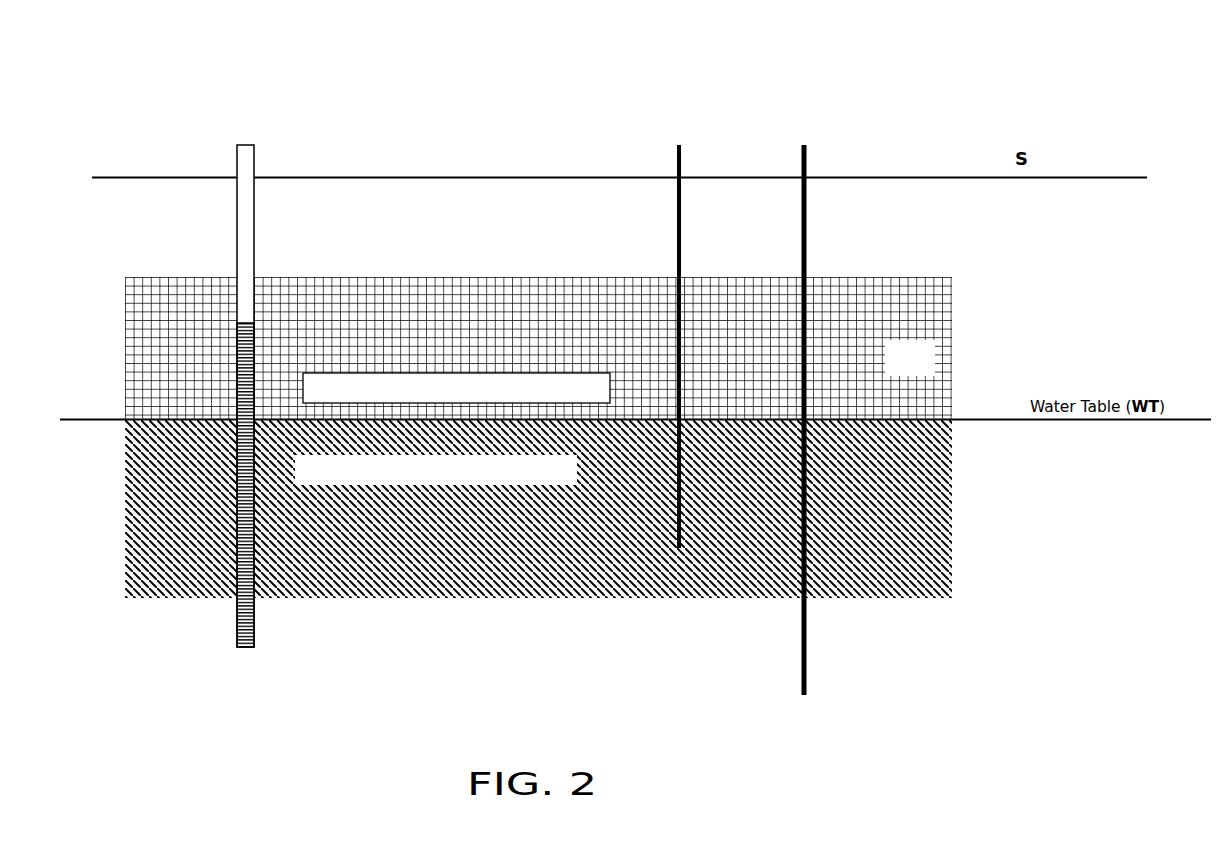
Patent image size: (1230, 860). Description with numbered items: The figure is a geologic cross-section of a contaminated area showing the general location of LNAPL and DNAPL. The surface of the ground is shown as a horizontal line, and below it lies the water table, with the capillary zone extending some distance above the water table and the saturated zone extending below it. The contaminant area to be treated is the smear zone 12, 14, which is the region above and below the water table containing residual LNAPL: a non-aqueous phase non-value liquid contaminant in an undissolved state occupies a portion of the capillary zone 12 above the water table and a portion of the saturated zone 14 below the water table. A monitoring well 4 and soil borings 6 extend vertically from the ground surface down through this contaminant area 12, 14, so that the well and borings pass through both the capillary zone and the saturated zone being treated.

The monitoring well 4 is at (237, 145).
The soil boring 6 is at (804, 145).
The capillary zone portion of the smear zone 12 is at (125, 342).
The saturated zone portion of the smear zone 14 is at (125, 532).